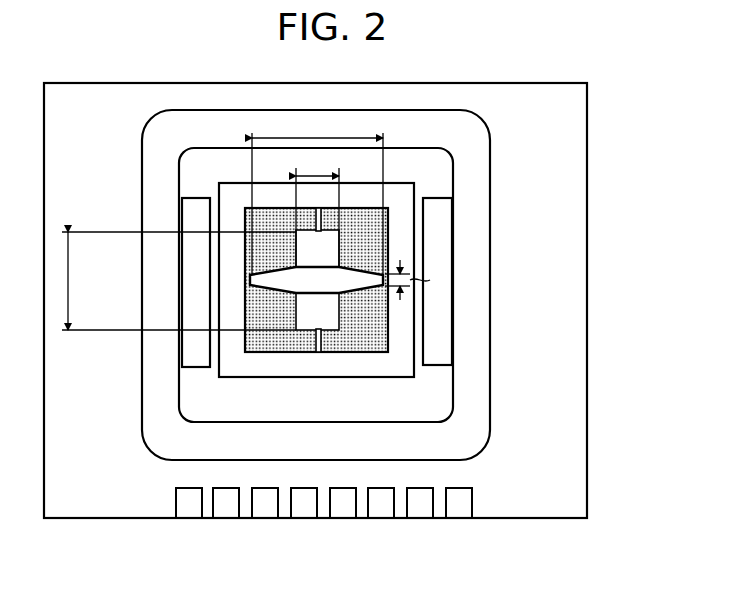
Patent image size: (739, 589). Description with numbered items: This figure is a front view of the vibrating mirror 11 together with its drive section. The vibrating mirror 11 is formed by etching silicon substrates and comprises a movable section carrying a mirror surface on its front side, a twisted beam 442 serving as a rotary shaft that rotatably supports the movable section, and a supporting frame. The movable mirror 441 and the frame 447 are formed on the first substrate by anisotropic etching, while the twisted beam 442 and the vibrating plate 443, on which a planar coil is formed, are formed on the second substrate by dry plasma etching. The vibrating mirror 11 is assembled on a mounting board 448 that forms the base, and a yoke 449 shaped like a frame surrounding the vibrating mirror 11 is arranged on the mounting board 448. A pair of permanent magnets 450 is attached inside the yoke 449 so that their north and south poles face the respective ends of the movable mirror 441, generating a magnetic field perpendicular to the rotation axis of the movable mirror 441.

The vibrating mirror 11 is at (579, 65).
The movable mirror 441 is at (265, 280).
The twisted beam 442 is at (319, 336).
The vibrating plate 443 is at (307, 318).
The frame 447 is at (250, 367).
The mounting board 448 is at (563, 205).
The yoke 449 is at (473, 253).
The permanent magnets 450 is at (192, 309).